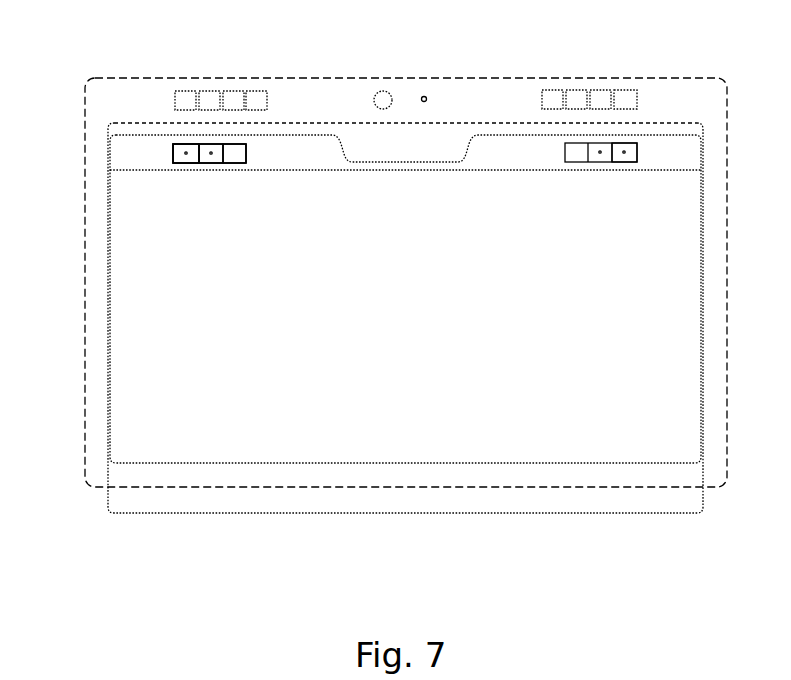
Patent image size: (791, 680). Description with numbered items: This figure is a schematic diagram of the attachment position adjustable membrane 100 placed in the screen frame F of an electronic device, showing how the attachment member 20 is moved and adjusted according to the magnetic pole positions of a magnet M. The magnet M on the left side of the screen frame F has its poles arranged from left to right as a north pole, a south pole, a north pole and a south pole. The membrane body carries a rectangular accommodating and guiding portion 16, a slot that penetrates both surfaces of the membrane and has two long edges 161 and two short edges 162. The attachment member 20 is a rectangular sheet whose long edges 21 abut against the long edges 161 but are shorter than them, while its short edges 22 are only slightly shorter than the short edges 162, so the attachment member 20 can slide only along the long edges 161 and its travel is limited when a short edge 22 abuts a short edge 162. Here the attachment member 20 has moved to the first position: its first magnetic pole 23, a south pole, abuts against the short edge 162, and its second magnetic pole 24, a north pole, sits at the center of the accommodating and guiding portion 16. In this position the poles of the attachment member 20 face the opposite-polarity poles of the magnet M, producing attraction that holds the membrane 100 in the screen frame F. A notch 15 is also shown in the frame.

The screen frame F is at (158, 78).
The magnet M is at (223, 80).
The attachment position adjustable membrane 100 is at (168, 500).
The notch / receiving groove 15 is at (423, 162).
The accommodating and guiding portion 16 is at (580, 157).
The attachment member 20 is at (622, 148).
The long edge 161 is at (212, 144).
The long edge 21 is at (192, 144).
The short edge 22 is at (180, 163).
The first magnetic pole 23 is at (173, 148).
The second magnetic pole 24 is at (186, 163).
The short edge 162 is at (176, 160).